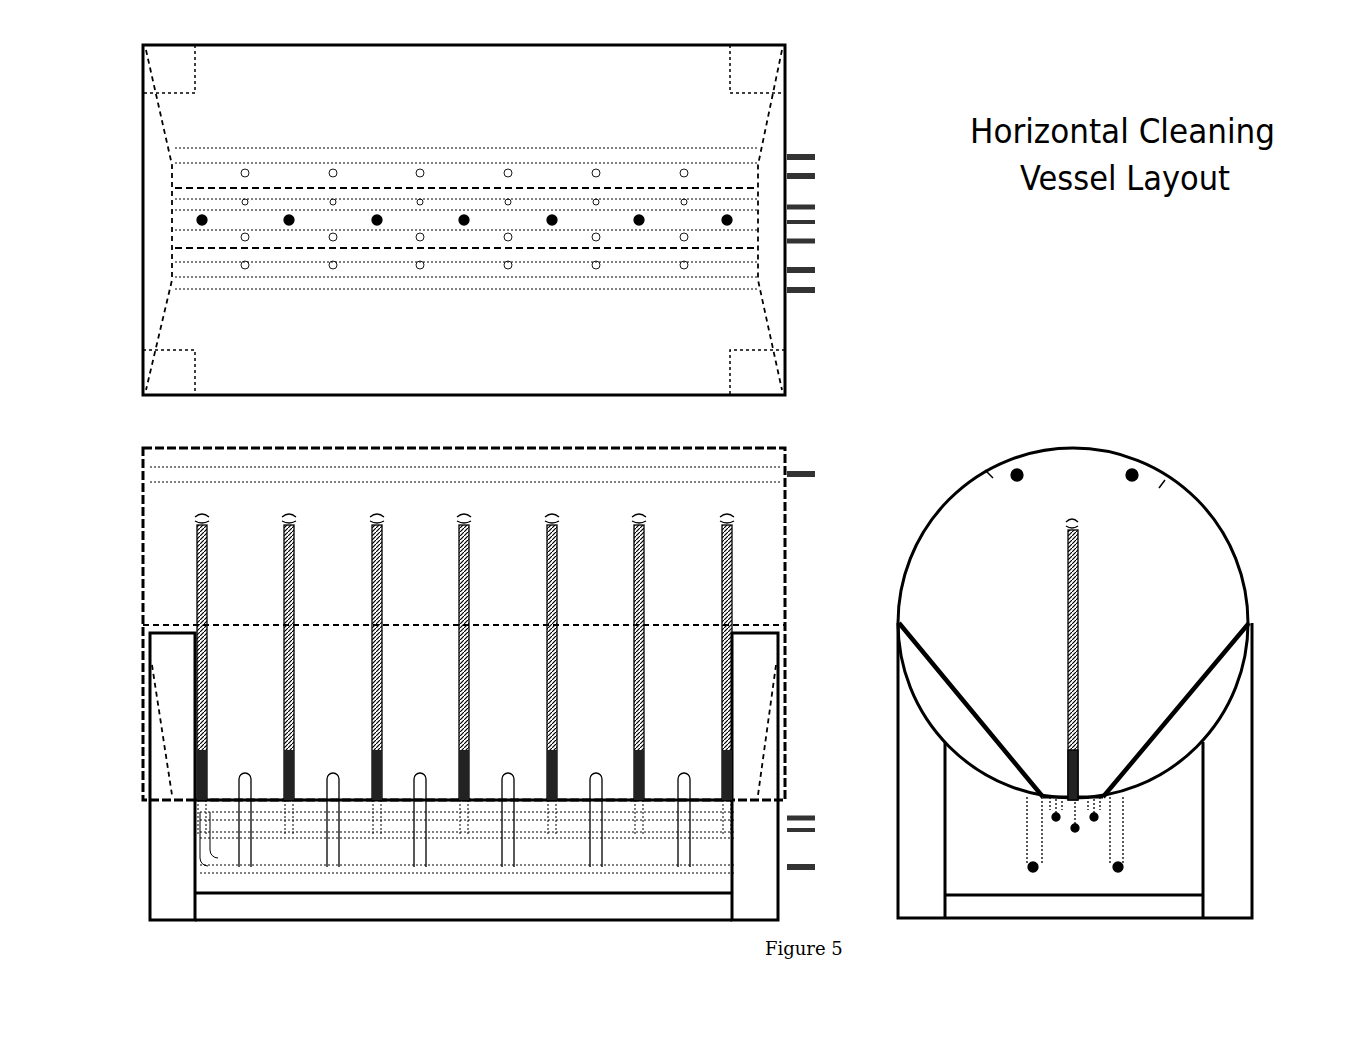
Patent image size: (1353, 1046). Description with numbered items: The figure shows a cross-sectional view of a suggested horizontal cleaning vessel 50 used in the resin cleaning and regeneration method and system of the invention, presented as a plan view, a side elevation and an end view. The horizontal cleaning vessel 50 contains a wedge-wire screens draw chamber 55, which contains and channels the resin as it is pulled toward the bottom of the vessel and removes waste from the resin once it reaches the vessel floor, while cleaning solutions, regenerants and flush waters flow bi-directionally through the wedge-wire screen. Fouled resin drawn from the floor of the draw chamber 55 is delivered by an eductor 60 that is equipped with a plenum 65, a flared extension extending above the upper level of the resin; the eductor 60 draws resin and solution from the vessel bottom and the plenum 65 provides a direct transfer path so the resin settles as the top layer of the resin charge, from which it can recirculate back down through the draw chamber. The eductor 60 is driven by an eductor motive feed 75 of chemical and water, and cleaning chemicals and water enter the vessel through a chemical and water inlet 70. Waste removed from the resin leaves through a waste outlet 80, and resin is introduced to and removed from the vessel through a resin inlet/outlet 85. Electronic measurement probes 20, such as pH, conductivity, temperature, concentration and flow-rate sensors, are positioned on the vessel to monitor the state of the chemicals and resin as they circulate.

The electronic measurement probes 20 is at (990, 478).
The horizontal cleaning vessel 50 is at (1224, 534).
The wedge-wire screens draw chamber 55 is at (908, 650).
The eductor 60 is at (1085, 780).
The plenum 65 is at (1080, 742).
The chemical and water inlet 70 is at (815, 157).
The eductor motive feed 75 is at (815, 222).
The waste outlet 80 is at (1024, 521).
The resin inlet/outlet 85 is at (815, 207).